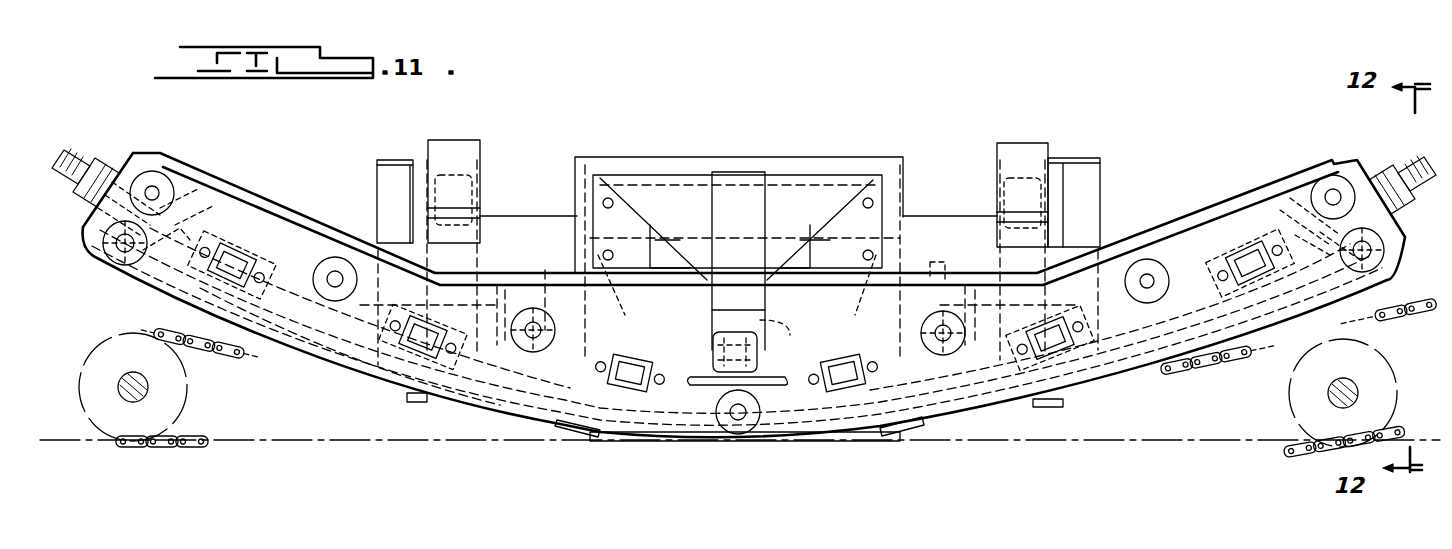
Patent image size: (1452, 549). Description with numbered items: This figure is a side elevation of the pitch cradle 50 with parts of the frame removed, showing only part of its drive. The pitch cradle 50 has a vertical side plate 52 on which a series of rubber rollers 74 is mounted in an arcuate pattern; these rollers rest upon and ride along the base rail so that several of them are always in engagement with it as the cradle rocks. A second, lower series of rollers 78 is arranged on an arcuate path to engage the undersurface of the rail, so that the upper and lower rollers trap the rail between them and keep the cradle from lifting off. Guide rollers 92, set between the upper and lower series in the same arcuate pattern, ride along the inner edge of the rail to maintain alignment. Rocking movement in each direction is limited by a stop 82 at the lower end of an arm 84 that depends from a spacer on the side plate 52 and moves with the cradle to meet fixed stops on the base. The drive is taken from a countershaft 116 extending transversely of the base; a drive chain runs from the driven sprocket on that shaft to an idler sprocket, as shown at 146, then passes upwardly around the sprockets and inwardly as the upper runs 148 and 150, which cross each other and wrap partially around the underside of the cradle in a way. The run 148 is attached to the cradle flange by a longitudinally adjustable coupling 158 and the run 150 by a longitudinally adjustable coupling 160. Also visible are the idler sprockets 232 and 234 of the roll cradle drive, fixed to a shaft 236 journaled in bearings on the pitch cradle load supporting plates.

The pitch cradle 50 is at (1223, 183).
The side plate 52 is at (335, 320).
The rollers 74 is at (160, 177).
The rollers 78 is at (743, 427).
The stop 82 is at (702, 377).
The arm 84 is at (763, 310).
The guide rollers 92 is at (245, 263).
The countershaft 116 is at (1330, 400).
The chain run between sprockets 146 is at (200, 447).
The inwardly extending chain portion 148 is at (1213, 363).
The inwardly extending chain portion 150 is at (233, 360).
The longitudinally adjustable coupling 158 is at (107, 170).
The longitudinally adjustable coupling 160 is at (1377, 177).
The idler sprocket 232 is at (950, 253).
The idler sprocket 234 is at (467, 148).
The shaft 236 is at (722, 300).